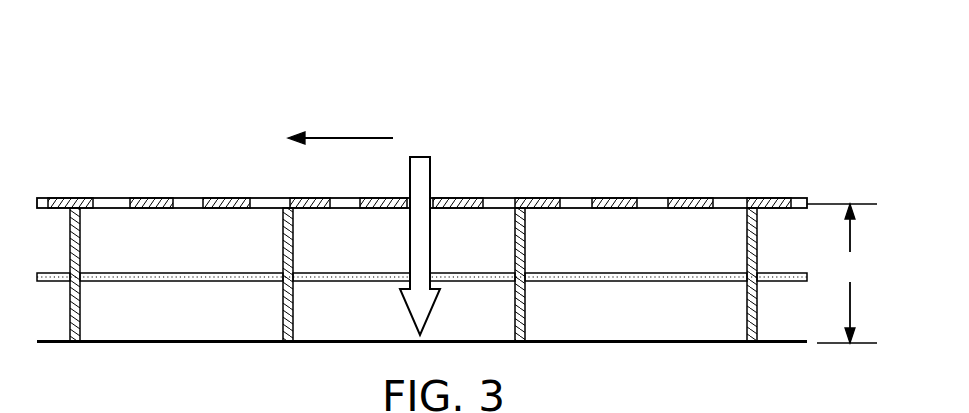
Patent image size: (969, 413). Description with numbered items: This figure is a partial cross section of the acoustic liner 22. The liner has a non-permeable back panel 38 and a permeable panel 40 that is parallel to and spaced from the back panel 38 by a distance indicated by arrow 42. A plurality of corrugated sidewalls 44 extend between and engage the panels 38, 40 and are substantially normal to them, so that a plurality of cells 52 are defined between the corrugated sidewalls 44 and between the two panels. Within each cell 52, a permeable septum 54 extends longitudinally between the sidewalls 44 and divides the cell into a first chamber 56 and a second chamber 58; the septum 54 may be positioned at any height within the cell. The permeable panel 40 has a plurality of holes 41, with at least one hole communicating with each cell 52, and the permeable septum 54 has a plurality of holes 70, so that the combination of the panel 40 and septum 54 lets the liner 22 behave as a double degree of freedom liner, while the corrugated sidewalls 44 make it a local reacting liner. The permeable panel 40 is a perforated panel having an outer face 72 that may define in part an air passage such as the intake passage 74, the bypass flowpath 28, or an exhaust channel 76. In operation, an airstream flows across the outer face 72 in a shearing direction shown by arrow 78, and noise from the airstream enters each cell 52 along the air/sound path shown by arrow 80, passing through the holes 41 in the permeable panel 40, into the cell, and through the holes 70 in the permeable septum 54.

The acoustic liner 22 is at (716, 113).
The bypass flowpath 28 is at (422, 157).
The intake passage 74 is at (422, 157).
The exhaust channel 76 is at (173, 131).
The outer face 72 is at (422, 166).
The permeable panel 40 is at (617, 198).
The holes 41 is at (498, 204).
The shearing direction arrow 78 is at (348, 138).
The air/sound path arrow 80 is at (422, 160).
The corrugated sidewalls 44 is at (525, 248).
The cells 52 is at (145, 256).
The first chamber 56 is at (242, 256).
The second chamber 58 is at (242, 322).
The permeable septum 54 is at (422, 305).
The holes 70 is at (688, 279).
The distance arrow 42 is at (842, 273).
The non-permeable back panel 38 is at (623, 343).